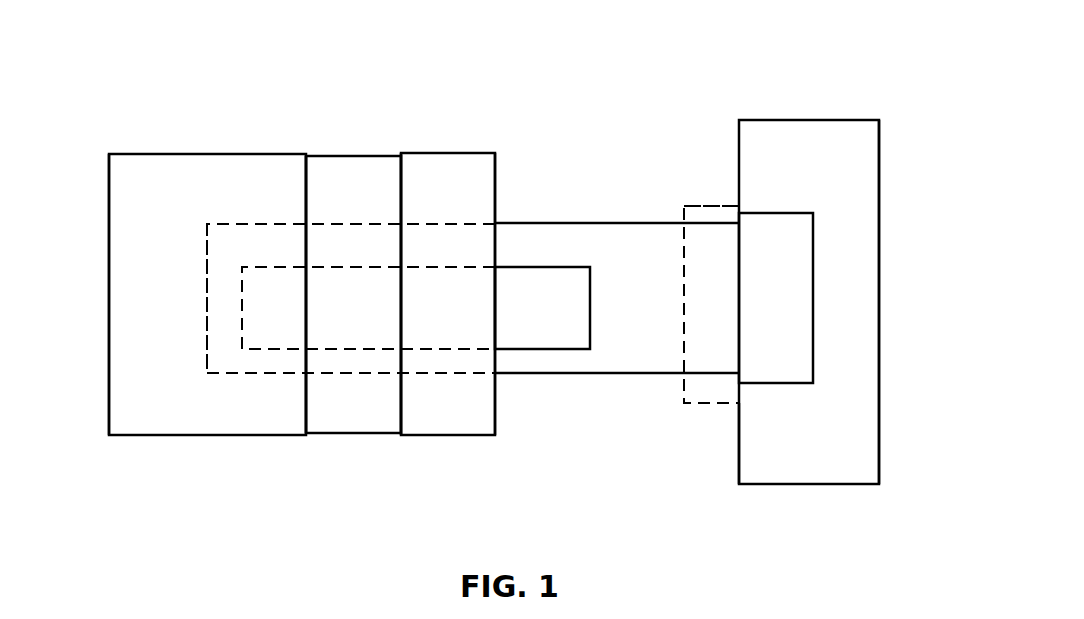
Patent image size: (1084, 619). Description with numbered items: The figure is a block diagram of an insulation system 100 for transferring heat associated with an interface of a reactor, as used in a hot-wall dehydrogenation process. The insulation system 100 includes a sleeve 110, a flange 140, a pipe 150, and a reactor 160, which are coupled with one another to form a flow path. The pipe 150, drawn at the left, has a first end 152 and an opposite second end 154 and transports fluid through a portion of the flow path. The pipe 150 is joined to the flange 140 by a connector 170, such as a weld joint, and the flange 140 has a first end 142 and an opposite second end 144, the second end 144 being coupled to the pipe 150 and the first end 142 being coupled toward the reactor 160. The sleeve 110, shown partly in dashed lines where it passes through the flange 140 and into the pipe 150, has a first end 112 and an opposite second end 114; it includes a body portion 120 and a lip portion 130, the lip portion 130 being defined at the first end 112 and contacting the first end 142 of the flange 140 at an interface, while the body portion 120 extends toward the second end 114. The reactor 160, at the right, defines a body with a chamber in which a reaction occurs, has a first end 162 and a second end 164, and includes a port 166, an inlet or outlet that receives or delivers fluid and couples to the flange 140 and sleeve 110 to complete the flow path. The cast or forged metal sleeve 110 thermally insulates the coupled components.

The insulation system 100 is at (122, 79).
The sleeve 110 is at (675, 252).
The first end 112 is at (727, 188).
The second end 114 is at (184, 264).
The body portion 120 is at (524, 332).
The lip portion 130 is at (694, 330).
The flange 140 is at (430, 210).
The first end 142 is at (495, 136).
The second end 144 is at (402, 130).
The pipe 150 is at (190, 210).
The first end 152 is at (302, 138).
The second end 154 is at (108, 137).
The reactor 160 is at (791, 176).
The first end 162 is at (725, 481).
The second end 164 is at (891, 488).
The port 166 is at (758, 324).
The connector 170 is at (352, 431).